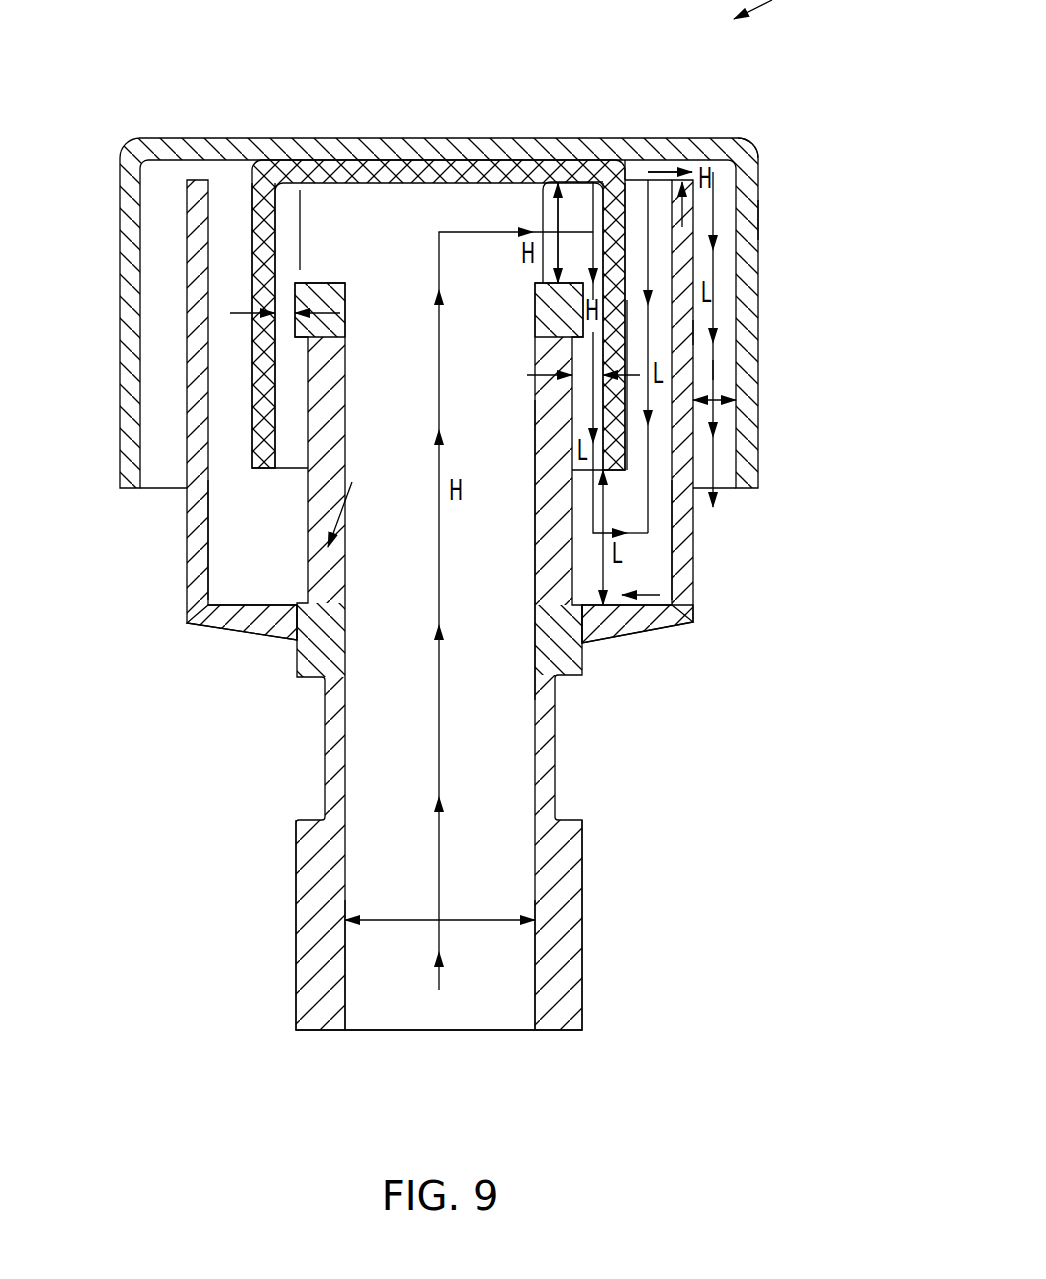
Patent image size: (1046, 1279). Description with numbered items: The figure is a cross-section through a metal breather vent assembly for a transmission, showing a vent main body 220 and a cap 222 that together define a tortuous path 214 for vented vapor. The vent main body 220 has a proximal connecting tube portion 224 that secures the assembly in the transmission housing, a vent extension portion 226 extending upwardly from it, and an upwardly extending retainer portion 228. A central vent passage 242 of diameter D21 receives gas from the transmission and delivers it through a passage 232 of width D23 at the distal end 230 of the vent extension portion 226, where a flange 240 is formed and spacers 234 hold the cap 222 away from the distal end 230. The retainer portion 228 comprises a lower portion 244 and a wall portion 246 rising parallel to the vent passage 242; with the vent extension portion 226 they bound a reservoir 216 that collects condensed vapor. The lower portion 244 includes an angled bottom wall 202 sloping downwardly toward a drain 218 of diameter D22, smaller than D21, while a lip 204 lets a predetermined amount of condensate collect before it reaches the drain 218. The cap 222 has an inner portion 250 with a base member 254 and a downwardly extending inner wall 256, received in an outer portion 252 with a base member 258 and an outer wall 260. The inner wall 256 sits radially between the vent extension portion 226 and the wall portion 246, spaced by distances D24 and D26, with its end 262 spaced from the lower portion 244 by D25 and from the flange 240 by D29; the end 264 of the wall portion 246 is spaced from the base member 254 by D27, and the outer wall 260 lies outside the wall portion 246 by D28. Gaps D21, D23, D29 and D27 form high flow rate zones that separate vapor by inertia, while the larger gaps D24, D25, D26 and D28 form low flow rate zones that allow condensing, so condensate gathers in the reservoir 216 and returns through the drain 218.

The angled bottom wall 202 is at (597, 622).
The lip 204 is at (257, 624).
The tortuous path 214 is at (716, 367).
The reservoir 216 is at (242, 573).
The drain 218 is at (319, 626).
The vent main body 220 is at (293, 1034).
The cap 222 is at (128, 127).
The connecting tube portion 224 is at (588, 967).
The vent extension portion 226 is at (543, 548).
The retainer portion 228 is at (689, 637).
The distal end 230 is at (322, 286).
The passage 232 is at (538, 210).
The spacer 234 is at (364, 196).
The flange 240 is at (308, 290).
The vent passage 242 is at (484, 1003).
The lower portion 244 is at (641, 639).
The wall portion 246 is at (607, 579).
The inner portion 250 is at (584, 149).
The outer portion 252 is at (752, 146).
The base member 254 is at (433, 170).
The inner wall 256 is at (628, 188).
The base member 258 is at (730, 136).
The outer wall 260 is at (750, 222).
The end 262 is at (617, 473).
The end 264 is at (205, 178).
The vent passage diameter D21 is at (482, 918).
The drain diameter D22 is at (345, 513).
The passage width D23 is at (556, 200).
The distance between vent extension portion and inner wall D24 is at (527, 375).
The distance between inner wall end and lower portion D25 is at (660, 595).
The distance between inner wall and wall portion D26 is at (682, 334).
The distance between wall portion end and base D27 is at (683, 156).
The distance between wall portion and outer wall D28 is at (737, 387).
The distance between flange and inner wall D29 is at (247, 312).